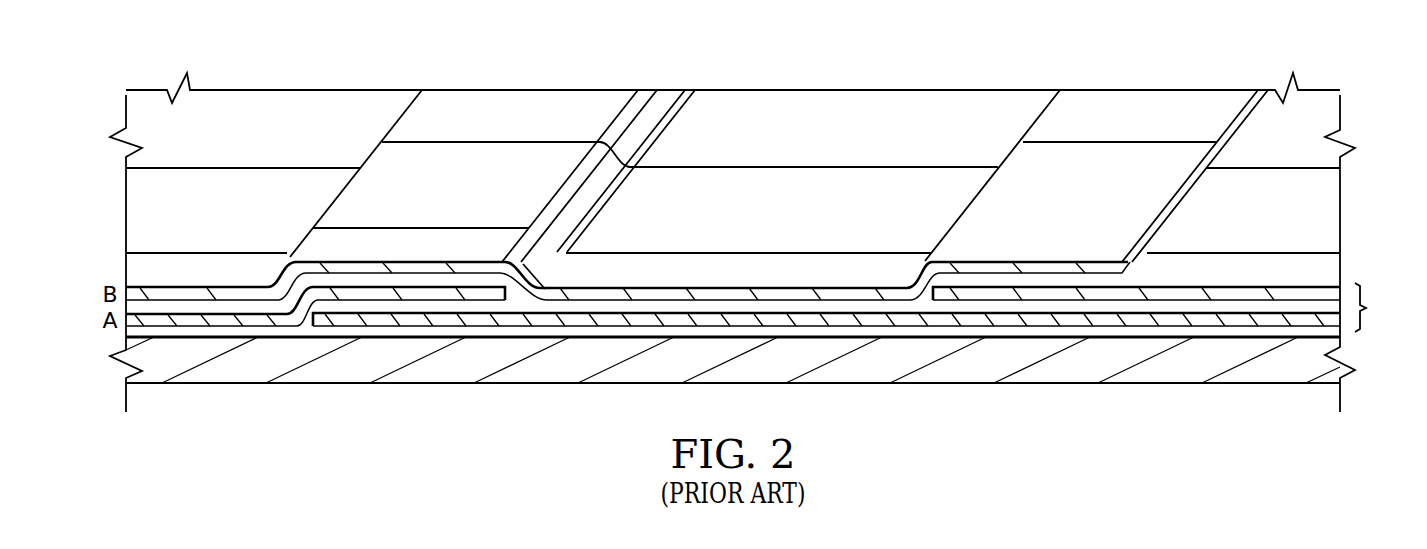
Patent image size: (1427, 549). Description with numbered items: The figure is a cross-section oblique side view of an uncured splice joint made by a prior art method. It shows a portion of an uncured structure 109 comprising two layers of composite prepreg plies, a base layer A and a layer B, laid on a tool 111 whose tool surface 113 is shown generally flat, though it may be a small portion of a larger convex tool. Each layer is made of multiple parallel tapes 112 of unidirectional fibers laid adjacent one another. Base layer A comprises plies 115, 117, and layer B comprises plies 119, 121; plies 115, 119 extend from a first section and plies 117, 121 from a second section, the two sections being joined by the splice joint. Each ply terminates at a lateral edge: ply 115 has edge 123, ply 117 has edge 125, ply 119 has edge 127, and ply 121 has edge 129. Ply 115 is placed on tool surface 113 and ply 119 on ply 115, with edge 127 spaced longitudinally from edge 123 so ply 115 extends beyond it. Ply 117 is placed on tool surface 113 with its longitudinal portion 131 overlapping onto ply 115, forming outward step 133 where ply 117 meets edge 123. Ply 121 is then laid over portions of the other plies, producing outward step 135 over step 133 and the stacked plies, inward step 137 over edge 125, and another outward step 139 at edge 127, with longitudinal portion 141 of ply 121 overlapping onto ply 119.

The uncured structure 109 is at (1175, 307).
The tool 111 is at (423, 394).
The parallel tapes 112 is at (903, 97).
The tool surface 113 is at (857, 331).
The ply 115 is at (1228, 340).
The ply 117 is at (216, 340).
The ply 119 is at (1334, 216).
The ply 121 is at (266, 104).
The edge 123 is at (297, 267).
The edge 125 is at (513, 293).
The edge 127 is at (938, 272).
The edge 129 is at (1185, 190).
The longitudinal portion 131 is at (424, 277).
The outward step 133 is at (302, 302).
The outward step 135 is at (410, 100).
The inward step 137 is at (665, 102).
The outward step 139 is at (1040, 107).
The longitudinal portion 141 is at (1137, 97).